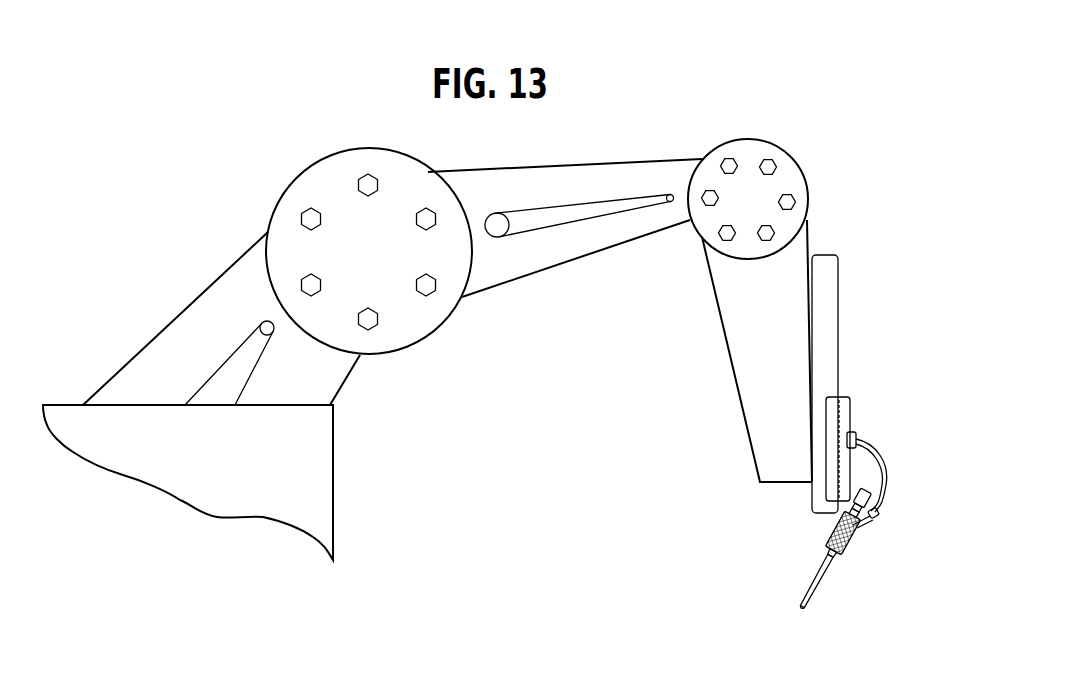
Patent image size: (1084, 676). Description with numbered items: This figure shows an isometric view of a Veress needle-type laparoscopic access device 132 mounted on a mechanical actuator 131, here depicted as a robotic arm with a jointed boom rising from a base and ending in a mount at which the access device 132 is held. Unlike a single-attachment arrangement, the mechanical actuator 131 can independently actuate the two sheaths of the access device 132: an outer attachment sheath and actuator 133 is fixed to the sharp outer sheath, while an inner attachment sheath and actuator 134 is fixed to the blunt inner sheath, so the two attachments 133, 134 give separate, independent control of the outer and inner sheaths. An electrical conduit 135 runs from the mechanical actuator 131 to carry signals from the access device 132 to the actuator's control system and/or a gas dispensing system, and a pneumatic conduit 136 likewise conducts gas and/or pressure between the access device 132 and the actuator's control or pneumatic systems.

The mechanical actuator 131 is at (598, 280).
The laparoscopic access device 132 is at (812, 570).
The outer attachment sheath and actuator 133 is at (855, 550).
The inner attachment sheath and actuator 134 is at (853, 487).
The electrical conduit 135 is at (883, 513).
The pneumatic conduit 136 is at (890, 463).